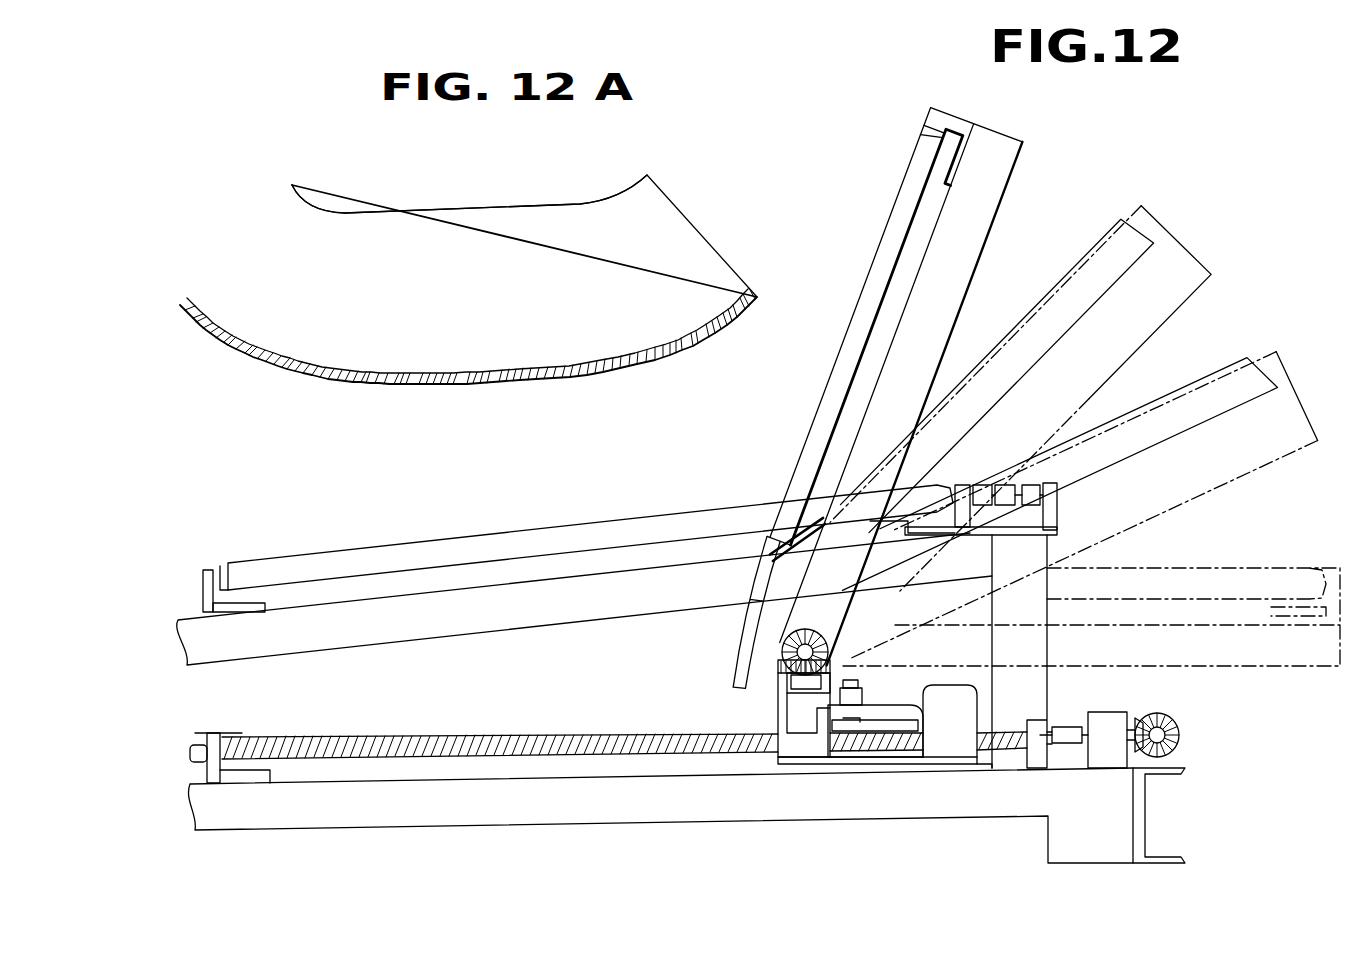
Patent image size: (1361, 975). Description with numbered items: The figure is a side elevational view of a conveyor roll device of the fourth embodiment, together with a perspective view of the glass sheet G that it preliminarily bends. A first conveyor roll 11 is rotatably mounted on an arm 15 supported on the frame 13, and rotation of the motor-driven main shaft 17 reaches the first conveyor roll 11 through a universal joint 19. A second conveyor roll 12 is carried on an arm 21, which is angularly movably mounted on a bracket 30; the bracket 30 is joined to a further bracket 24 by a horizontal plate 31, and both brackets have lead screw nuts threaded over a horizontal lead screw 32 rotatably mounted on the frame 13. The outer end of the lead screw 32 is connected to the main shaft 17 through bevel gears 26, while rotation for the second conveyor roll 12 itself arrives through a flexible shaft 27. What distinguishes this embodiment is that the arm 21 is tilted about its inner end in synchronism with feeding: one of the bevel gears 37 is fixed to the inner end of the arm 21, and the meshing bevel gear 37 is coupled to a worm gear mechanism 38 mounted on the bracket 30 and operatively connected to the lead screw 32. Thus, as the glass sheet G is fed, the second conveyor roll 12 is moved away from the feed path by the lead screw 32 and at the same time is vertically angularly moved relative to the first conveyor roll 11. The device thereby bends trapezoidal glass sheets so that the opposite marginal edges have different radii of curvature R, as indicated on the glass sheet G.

In FIG. 12, the first conveyor roll 11 is at (462, 536).
In FIG. 12, the second conveyor roll 12 is at (860, 307).
In FIG. 12, the frame 13 is at (548, 820).
In FIG. 12, the arm 15 is at (528, 612).
In FIG. 12, the main shaft 17 is at (1180, 746).
In FIG. 12, the universal joint 19 is at (990, 482).
In FIG. 12, the arm 21 is at (995, 180).
In FIG. 12, the bracket 24 is at (965, 758).
In FIG. 12, the bevel gears 26 is at (1160, 715).
In FIG. 12, the flexible shaft 27 is at (730, 670).
In FIG. 12, the bracket 30 is at (812, 757).
In FIG. 12, the horizontal plate 31 is at (888, 768).
In FIG. 12, the lead screw 32 is at (646, 758).
In FIG. 12, the bevel gears 37 is at (782, 668).
In FIG. 12, the worm gear mechanism 38 is at (806, 724).
In FIG. 12A, the radius of curvature R is at (323, 203).
In FIG. 12A, the glass sheet G is at (463, 368).